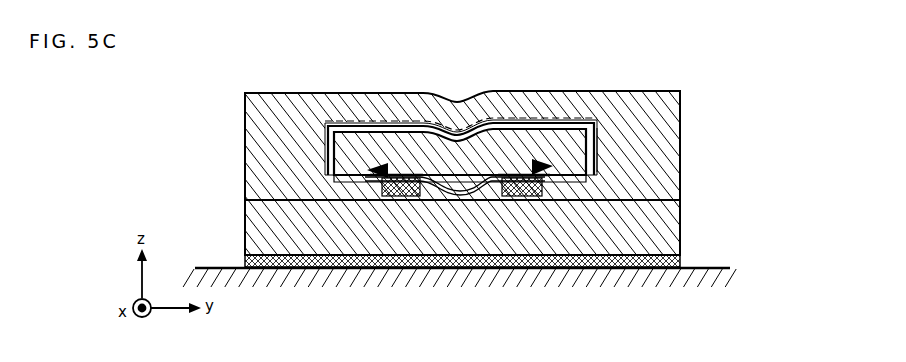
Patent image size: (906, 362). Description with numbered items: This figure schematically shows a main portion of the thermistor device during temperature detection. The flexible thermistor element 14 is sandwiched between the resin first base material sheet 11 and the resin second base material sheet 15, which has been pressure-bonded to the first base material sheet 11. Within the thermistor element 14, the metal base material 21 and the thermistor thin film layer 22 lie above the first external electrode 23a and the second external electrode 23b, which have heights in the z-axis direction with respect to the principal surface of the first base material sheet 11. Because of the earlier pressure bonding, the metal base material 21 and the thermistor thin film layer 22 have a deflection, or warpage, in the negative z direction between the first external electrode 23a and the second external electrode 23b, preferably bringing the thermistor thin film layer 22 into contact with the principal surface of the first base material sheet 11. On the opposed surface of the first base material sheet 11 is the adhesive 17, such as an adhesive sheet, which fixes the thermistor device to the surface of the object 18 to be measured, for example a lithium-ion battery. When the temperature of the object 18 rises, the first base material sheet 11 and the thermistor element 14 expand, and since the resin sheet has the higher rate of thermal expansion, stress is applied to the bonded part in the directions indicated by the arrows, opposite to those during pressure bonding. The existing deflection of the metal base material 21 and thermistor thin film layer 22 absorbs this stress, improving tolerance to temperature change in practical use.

The first base material sheet 11 is at (680, 225).
The thermistor element 14 is at (323, 148).
The second base material sheet 15 is at (680, 137).
The adhesive 17 is at (243, 257).
The object to be measured 18 is at (722, 274).
The metal base material 21 is at (598, 168).
The thermistor thin film layer 22 is at (462, 197).
The first external electrode 23a is at (398, 197).
The second external electrode 23b is at (537, 197).